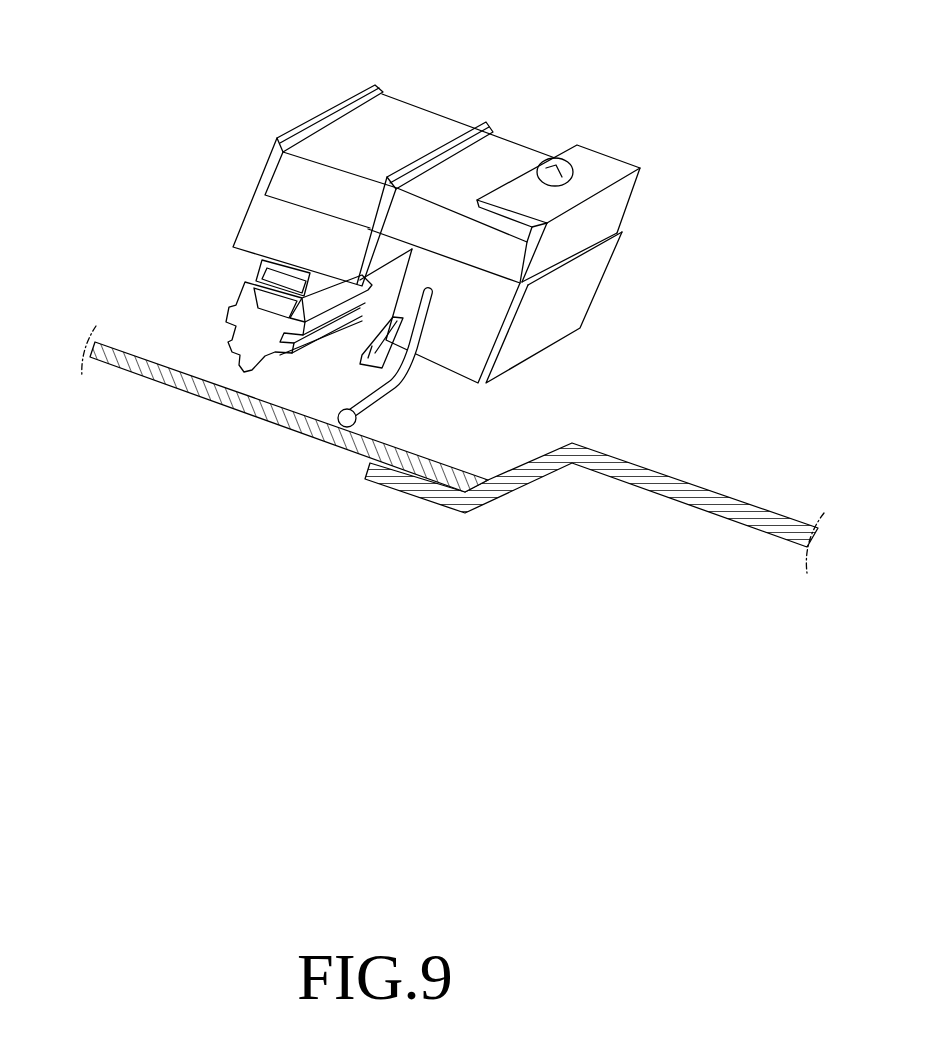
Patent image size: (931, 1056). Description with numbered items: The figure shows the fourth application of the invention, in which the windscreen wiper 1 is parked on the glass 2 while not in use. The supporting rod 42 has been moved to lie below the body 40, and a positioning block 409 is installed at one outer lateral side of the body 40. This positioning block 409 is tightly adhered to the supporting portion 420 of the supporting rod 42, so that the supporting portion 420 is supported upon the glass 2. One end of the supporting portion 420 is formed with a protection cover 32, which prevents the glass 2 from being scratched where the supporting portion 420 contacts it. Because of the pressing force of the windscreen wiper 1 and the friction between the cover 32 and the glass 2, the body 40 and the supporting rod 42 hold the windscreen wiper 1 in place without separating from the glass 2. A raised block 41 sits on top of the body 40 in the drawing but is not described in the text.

The windscreen wiper 1 is at (469, 312).
The glass 2 is at (140, 372).
The protection cover 32 is at (343, 425).
The body 40 is at (490, 307).
The top block 41 is at (598, 217).
The supporting rod 42 is at (455, 466).
The positioning block 409 is at (347, 360).
The supporting portion 420 is at (375, 400).